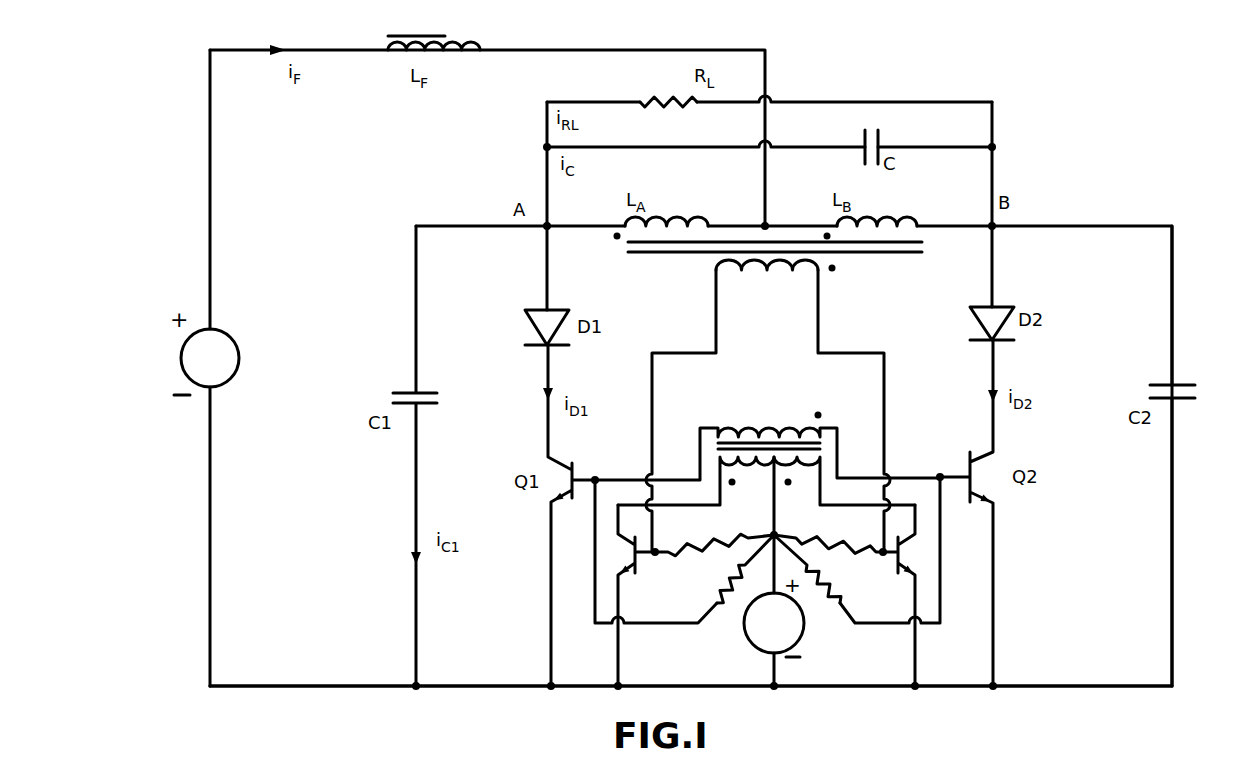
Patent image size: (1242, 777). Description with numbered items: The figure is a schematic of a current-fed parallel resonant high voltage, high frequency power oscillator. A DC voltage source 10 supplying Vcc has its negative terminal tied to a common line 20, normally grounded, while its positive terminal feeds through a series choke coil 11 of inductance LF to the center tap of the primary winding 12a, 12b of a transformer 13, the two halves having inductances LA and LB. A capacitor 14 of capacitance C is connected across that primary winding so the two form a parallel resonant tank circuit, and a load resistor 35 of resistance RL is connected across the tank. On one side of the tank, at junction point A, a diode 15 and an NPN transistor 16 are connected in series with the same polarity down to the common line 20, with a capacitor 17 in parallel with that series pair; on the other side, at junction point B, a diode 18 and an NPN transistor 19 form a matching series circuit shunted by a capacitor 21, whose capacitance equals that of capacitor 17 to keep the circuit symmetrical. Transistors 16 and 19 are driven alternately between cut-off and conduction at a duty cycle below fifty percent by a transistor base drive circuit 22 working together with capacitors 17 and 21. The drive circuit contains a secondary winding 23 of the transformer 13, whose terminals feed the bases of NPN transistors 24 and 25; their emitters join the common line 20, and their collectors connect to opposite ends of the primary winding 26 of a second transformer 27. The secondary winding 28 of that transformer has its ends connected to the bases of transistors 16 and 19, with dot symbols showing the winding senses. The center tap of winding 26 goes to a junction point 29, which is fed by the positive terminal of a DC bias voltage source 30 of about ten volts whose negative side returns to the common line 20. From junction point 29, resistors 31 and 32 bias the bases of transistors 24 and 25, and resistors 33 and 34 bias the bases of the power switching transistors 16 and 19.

The DC voltage source 10 is at (235, 340).
The series choke coil 11 is at (454, 36).
The primary winding 12a is at (691, 226).
The primary winding 12b is at (901, 226).
The transformer 13 is at (652, 262).
The capacitor 14 is at (881, 141).
The diode 15 is at (539, 317).
The NPN transistor 16 is at (548, 467).
The capacitor 17 is at (400, 392).
The diode 18 is at (1000, 317).
The NPN transistor 19 is at (991, 464).
The common line 20 is at (296, 686).
The capacitor 21 is at (1183, 384).
The transistor base drive circuit 22 is at (775, 379).
The secondary winding 23 is at (764, 271).
The NPN transistor 24 is at (613, 556).
The NPN transistor 25 is at (919, 556).
The primary winding 26 is at (760, 470).
The second transformer 27 is at (706, 449).
The secondary winding 28 is at (734, 430).
The circuit junction point 29 is at (775, 534).
The source of DC bias voltage 30 is at (744, 639).
The resistor 31 is at (700, 543).
The resistor 32 is at (834, 543).
The resistor 33 is at (720, 594).
The resistor 34 is at (838, 599).
The resistor 35 is at (640, 102).